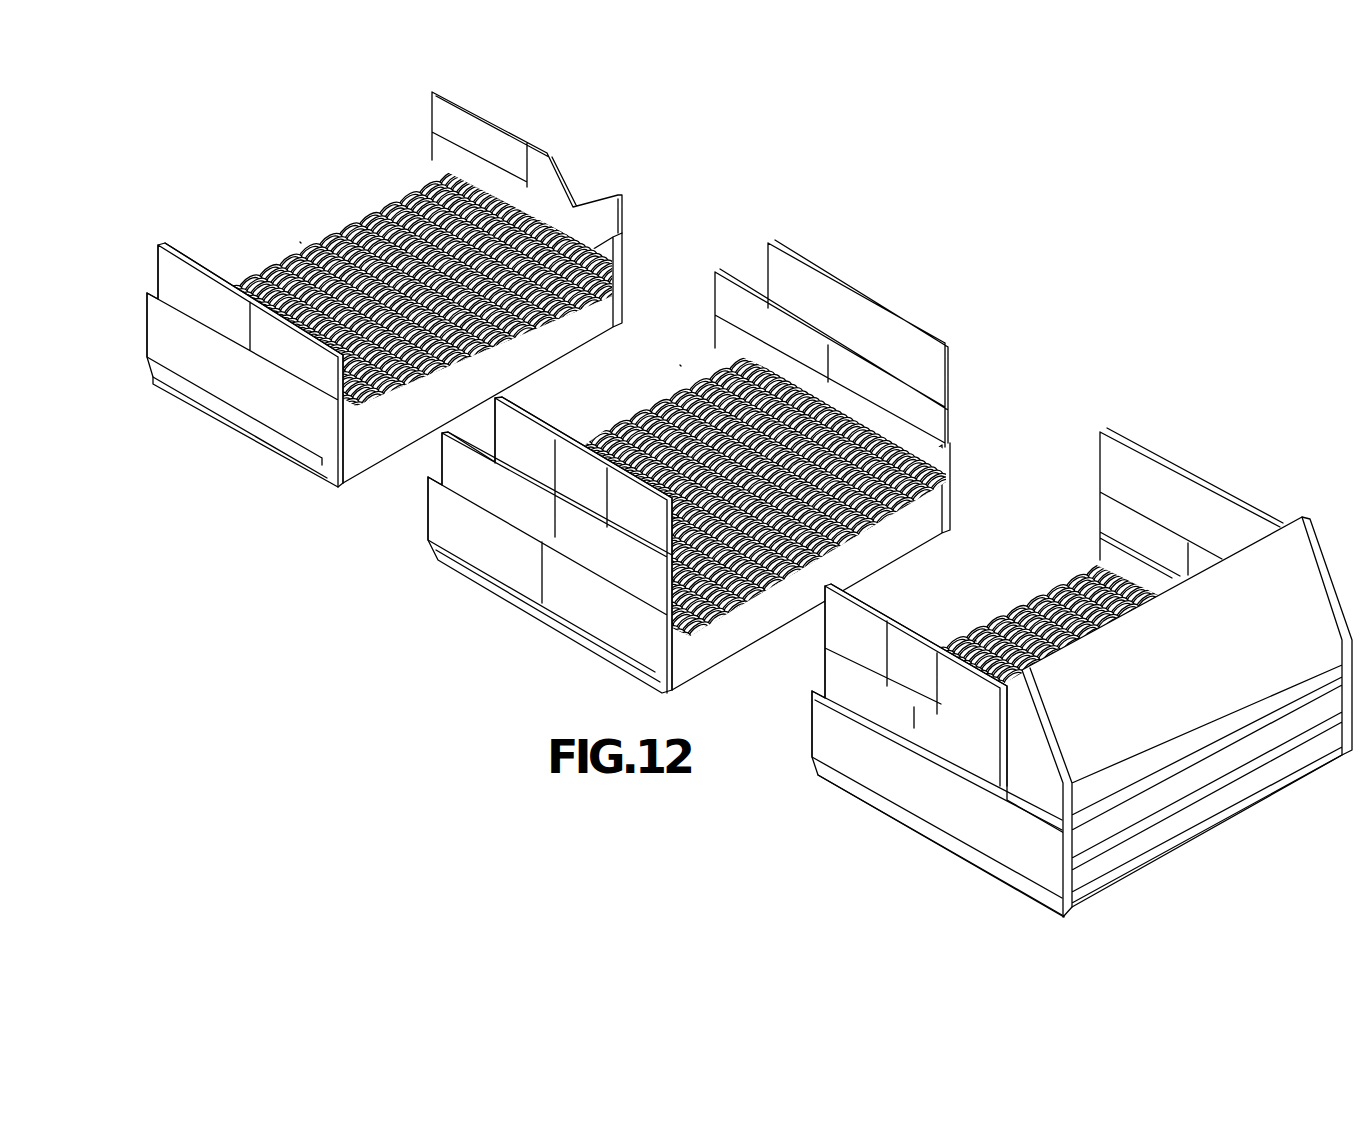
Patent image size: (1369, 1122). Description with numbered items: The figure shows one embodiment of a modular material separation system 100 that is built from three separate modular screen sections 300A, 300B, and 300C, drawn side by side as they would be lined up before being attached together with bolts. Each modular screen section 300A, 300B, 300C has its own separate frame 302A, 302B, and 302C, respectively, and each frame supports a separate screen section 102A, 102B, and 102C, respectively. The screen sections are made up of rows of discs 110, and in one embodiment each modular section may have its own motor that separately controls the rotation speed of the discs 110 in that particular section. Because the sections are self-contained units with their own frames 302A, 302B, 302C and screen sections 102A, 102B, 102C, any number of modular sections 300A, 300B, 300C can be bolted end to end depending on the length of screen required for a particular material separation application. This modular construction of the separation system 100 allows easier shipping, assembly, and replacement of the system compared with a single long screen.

The separation system 100 is at (749, 488).
The screen section 102A is at (378, 196).
The screen section 102B is at (605, 415).
The screen section 102C is at (1065, 580).
The discs 110 is at (300, 242).
The modular screen section 300A is at (414, 273).
The modular screen section 300B is at (701, 451).
The modular screen section 300C is at (1082, 657).
The frame 302A is at (505, 118).
The frame 302B is at (848, 280).
The frame 302C is at (1175, 462).